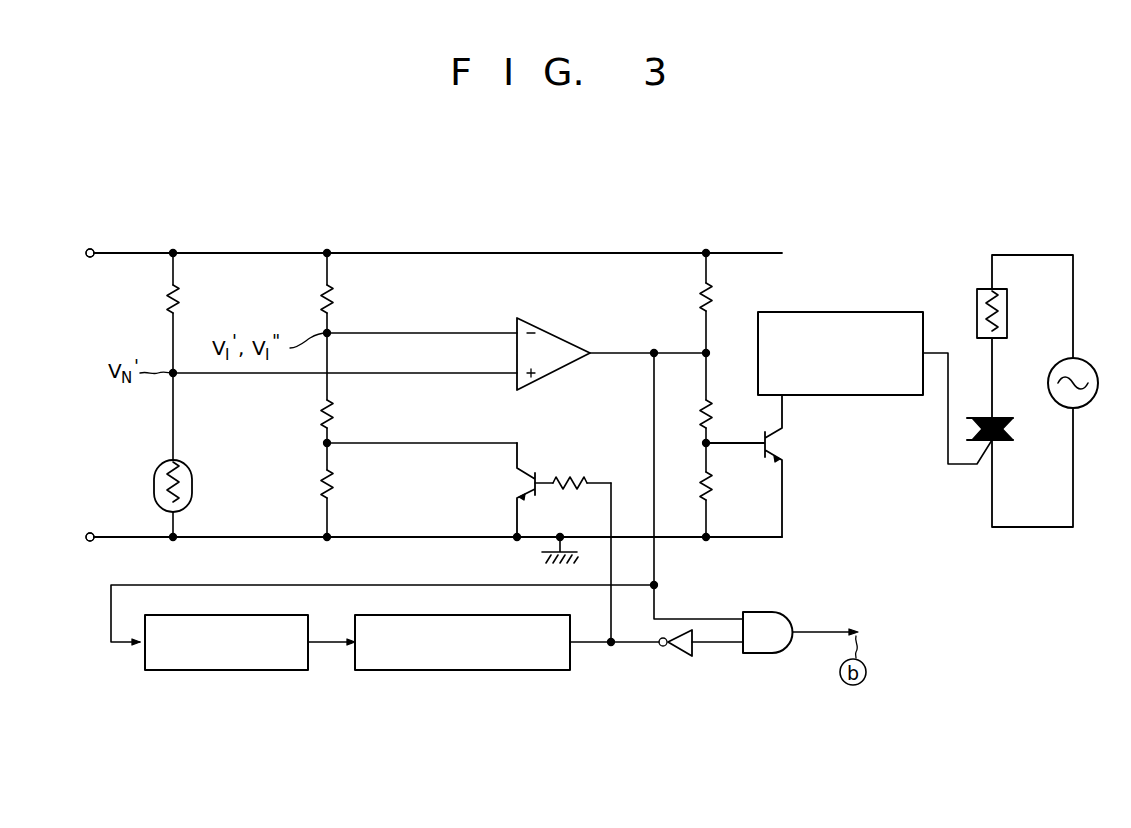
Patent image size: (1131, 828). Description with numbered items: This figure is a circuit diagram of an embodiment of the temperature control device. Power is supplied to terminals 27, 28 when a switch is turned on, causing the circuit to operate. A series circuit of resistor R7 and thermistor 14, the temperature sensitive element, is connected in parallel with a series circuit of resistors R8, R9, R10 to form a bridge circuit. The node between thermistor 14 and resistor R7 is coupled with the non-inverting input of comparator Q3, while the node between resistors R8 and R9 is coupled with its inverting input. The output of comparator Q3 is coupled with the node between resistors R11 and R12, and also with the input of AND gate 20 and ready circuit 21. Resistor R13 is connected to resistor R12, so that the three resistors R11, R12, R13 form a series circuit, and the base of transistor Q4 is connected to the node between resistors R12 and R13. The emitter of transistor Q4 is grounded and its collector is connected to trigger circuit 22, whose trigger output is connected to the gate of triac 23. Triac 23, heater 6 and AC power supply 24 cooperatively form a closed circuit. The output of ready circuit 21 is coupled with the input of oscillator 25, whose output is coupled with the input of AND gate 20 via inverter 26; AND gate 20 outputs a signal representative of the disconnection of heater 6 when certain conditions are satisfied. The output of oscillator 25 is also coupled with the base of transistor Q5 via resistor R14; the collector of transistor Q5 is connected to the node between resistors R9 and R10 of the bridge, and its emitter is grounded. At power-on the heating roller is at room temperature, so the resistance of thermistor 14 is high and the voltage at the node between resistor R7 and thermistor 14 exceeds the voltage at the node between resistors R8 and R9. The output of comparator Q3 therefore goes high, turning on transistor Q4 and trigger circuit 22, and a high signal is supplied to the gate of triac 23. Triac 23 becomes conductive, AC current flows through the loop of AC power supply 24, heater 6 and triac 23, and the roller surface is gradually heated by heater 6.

The terminal 27 is at (92, 248).
The terminal 28 is at (92, 532).
The resistor R7 is at (181, 299).
The resistor R8 is at (335, 299).
The resistor R9 is at (335, 414).
The resistor R10 is at (335, 484).
The resistor R11 is at (698, 299).
The resistor R12 is at (702, 405).
The resistor R13 is at (714, 487).
The resistor R14 is at (577, 470).
The thermistor 14 is at (193, 490).
The comparator Q3 is at (552, 330).
The transistor Q4 is at (788, 441).
The transistor Q5 is at (526, 483).
The trigger circuit 22 is at (875, 312).
The heater 6 is at (1008, 316).
The triac 23 is at (1018, 432).
The AC power supply 24 is at (1088, 362).
The ready circuit 21 is at (268, 670).
The oscillator 25 is at (537, 670).
The inverter 26 is at (684, 658).
The AND gate 20 is at (768, 612).